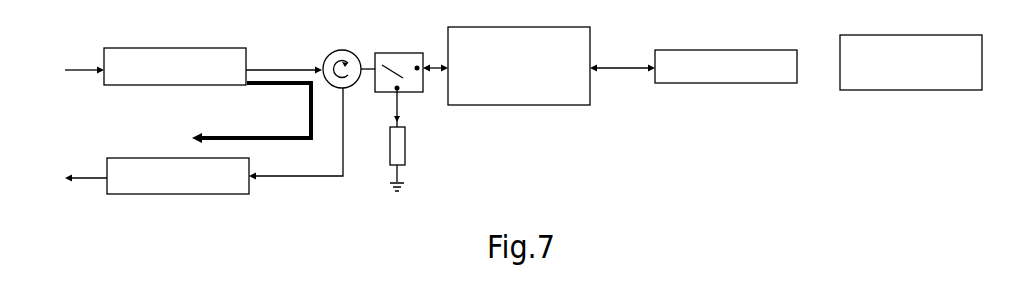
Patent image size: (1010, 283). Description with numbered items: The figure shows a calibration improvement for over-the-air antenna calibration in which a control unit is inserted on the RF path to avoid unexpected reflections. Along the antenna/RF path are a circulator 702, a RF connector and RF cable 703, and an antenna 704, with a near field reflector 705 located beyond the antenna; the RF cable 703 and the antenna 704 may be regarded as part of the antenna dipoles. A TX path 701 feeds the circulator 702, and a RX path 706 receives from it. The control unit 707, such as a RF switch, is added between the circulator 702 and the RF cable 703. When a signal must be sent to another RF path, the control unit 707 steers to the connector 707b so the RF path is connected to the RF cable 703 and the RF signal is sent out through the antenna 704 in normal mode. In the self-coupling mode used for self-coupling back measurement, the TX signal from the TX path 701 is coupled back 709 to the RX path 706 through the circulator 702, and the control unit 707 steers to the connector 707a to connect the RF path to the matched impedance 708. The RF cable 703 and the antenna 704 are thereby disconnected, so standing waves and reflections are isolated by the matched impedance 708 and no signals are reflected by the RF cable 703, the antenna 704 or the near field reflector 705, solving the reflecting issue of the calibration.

The TX path 701 is at (150, 78).
The circulator 702 is at (355, 43).
The RF connector and RF cable 703 is at (520, 56).
The antenna 704 is at (704, 78).
The near field reflector 705 is at (903, 63).
The RX path 706 is at (151, 191).
The control unit 707 is at (412, 43).
The connector 707a is at (383, 98).
The connector 707b is at (432, 88).
The matched impedance 708 is at (438, 171).
The couple back 709 is at (257, 130).